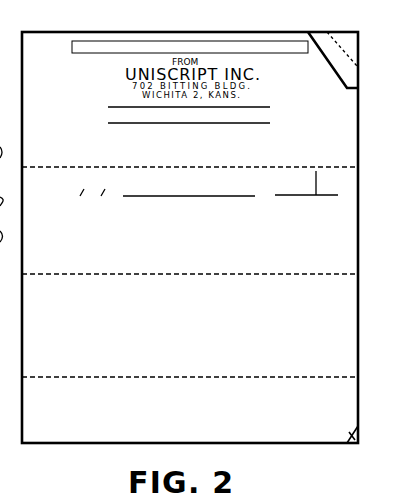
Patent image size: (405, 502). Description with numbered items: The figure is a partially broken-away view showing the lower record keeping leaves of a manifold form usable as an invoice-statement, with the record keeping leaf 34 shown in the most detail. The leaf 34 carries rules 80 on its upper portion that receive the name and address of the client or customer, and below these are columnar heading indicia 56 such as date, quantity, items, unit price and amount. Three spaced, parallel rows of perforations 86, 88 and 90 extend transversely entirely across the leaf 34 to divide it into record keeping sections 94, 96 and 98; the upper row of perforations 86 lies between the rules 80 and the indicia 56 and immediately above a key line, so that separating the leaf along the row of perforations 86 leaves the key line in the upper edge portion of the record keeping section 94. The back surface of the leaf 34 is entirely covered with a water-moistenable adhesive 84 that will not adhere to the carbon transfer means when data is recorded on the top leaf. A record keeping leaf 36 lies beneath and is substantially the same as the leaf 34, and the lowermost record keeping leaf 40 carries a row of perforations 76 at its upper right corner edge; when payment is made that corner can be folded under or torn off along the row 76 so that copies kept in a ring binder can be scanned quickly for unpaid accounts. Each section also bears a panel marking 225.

The record keeping leaf 34 is at (270, 429).
The record keeping leaf 36 is at (351, 443).
The record keeping leaf 40 is at (320, 33).
The indicia 56 is at (158, 212).
The row of perforations 76 is at (336, 36).
The rules 80 is at (120, 107).
The adhesive 84 is at (352, 425).
The row of perforations 86 is at (92, 165).
The row of perforations 88 is at (31, 274).
The row of perforations 90 is at (160, 375).
The record keeping section 94 is at (281, 263).
The record keeping section 96 is at (283, 357).
The record keeping section 98 is at (221, 389).
The panel numbering 225 is at (26, 198).